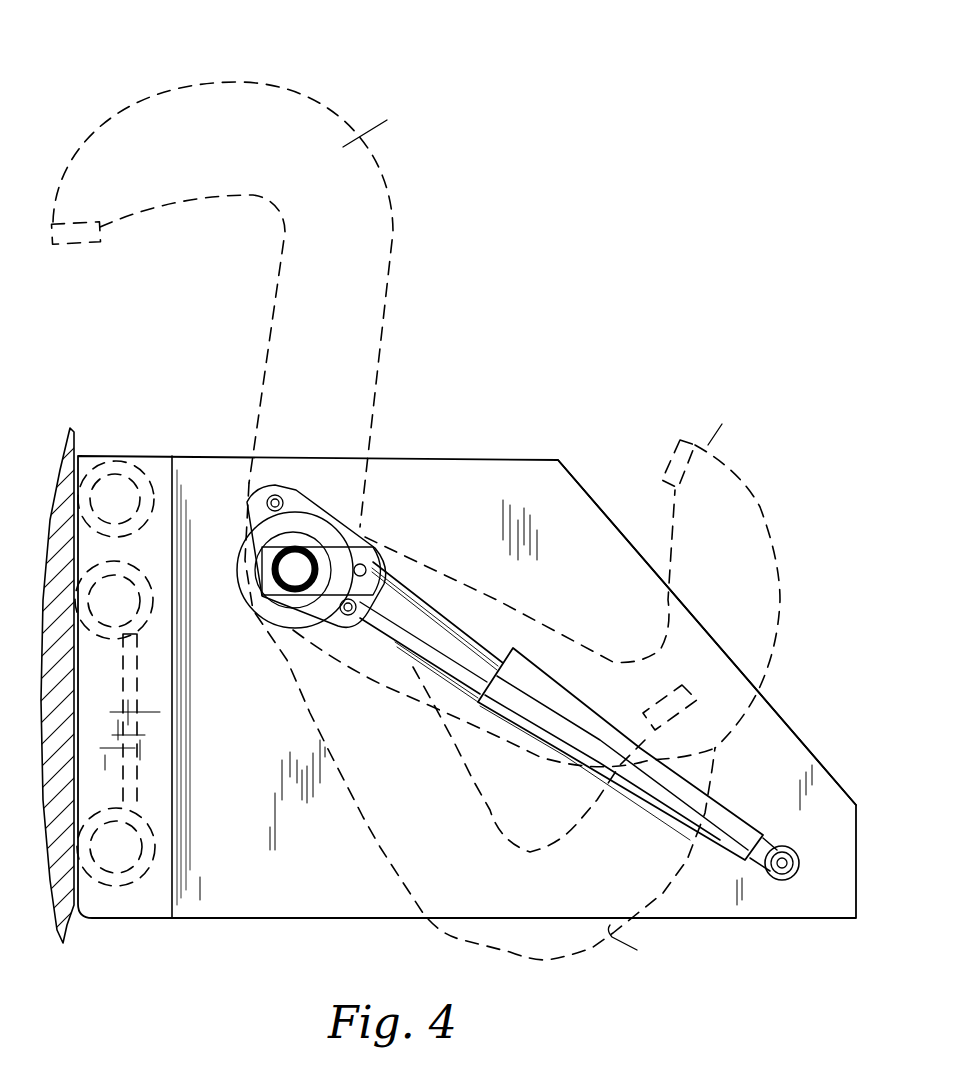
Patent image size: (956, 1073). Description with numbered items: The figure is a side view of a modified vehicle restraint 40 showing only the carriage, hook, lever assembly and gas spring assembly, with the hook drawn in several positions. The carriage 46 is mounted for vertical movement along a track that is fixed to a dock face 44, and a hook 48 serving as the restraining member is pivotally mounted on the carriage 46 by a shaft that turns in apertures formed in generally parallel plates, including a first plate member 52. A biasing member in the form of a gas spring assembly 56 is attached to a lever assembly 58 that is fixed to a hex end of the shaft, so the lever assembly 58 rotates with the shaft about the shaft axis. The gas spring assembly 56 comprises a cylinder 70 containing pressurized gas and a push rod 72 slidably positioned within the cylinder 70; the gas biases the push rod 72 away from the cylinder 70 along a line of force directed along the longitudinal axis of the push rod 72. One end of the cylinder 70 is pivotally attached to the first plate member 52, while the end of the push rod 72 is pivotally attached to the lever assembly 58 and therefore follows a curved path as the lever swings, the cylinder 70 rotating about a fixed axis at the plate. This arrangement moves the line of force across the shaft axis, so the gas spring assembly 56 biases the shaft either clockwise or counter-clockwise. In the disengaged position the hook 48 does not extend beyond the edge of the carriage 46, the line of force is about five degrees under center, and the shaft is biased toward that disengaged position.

The vehicle restraint 40 is at (586, 318).
The dock face 44 is at (70, 452).
The carriage 46 is at (213, 468).
The hook 48 is at (270, 95).
The first plate member 52 is at (790, 742).
The gas spring assembly 56 is at (567, 673).
The lever assembly 58 is at (378, 531).
The cylinder 70 is at (735, 819).
The push rod 72 is at (430, 603).